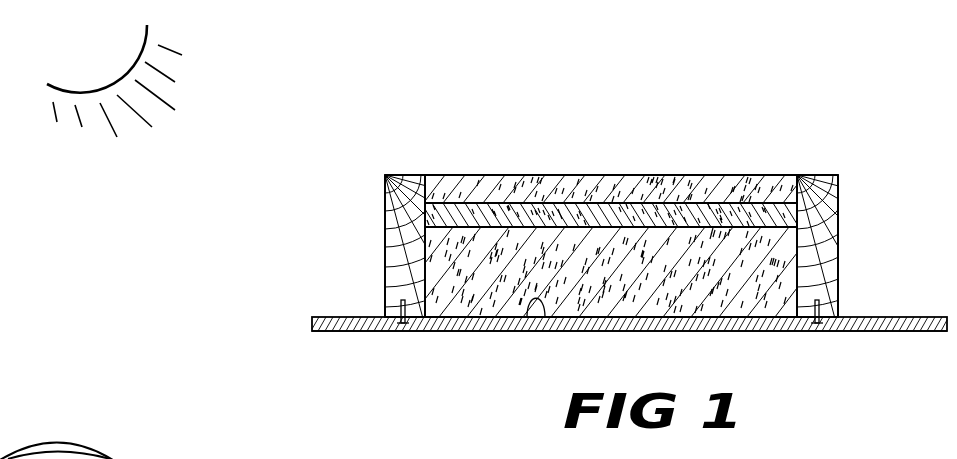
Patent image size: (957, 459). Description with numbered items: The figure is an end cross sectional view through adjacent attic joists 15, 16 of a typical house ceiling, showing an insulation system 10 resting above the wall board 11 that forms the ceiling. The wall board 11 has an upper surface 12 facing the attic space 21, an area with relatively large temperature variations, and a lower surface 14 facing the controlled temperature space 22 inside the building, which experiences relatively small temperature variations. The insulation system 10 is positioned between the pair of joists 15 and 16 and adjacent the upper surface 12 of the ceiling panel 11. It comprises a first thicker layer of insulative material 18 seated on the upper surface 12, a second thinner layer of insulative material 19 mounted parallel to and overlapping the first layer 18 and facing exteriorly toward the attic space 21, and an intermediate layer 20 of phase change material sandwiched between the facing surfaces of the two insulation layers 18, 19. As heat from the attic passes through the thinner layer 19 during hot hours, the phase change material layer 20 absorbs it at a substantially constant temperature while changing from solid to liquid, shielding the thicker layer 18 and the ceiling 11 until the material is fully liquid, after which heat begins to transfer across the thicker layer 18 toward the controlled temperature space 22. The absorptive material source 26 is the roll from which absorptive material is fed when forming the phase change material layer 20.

The insulation system 10 is at (382, 169).
The wall board 11 is at (342, 322).
The upper surface 12 is at (528, 317).
The lower surface 14 is at (752, 331).
The joist 15 is at (832, 229).
The joist 16 is at (393, 220).
The first thicker layer of insulative material 18 is at (762, 277).
The second thinner layer of insulative material 19 is at (738, 192).
The intermediate layer of phase change material 20 is at (492, 224).
The attic space 21 is at (511, 113).
The controlled temperature space 22 is at (485, 409).
The absorptive material source 26 is at (123, 452).